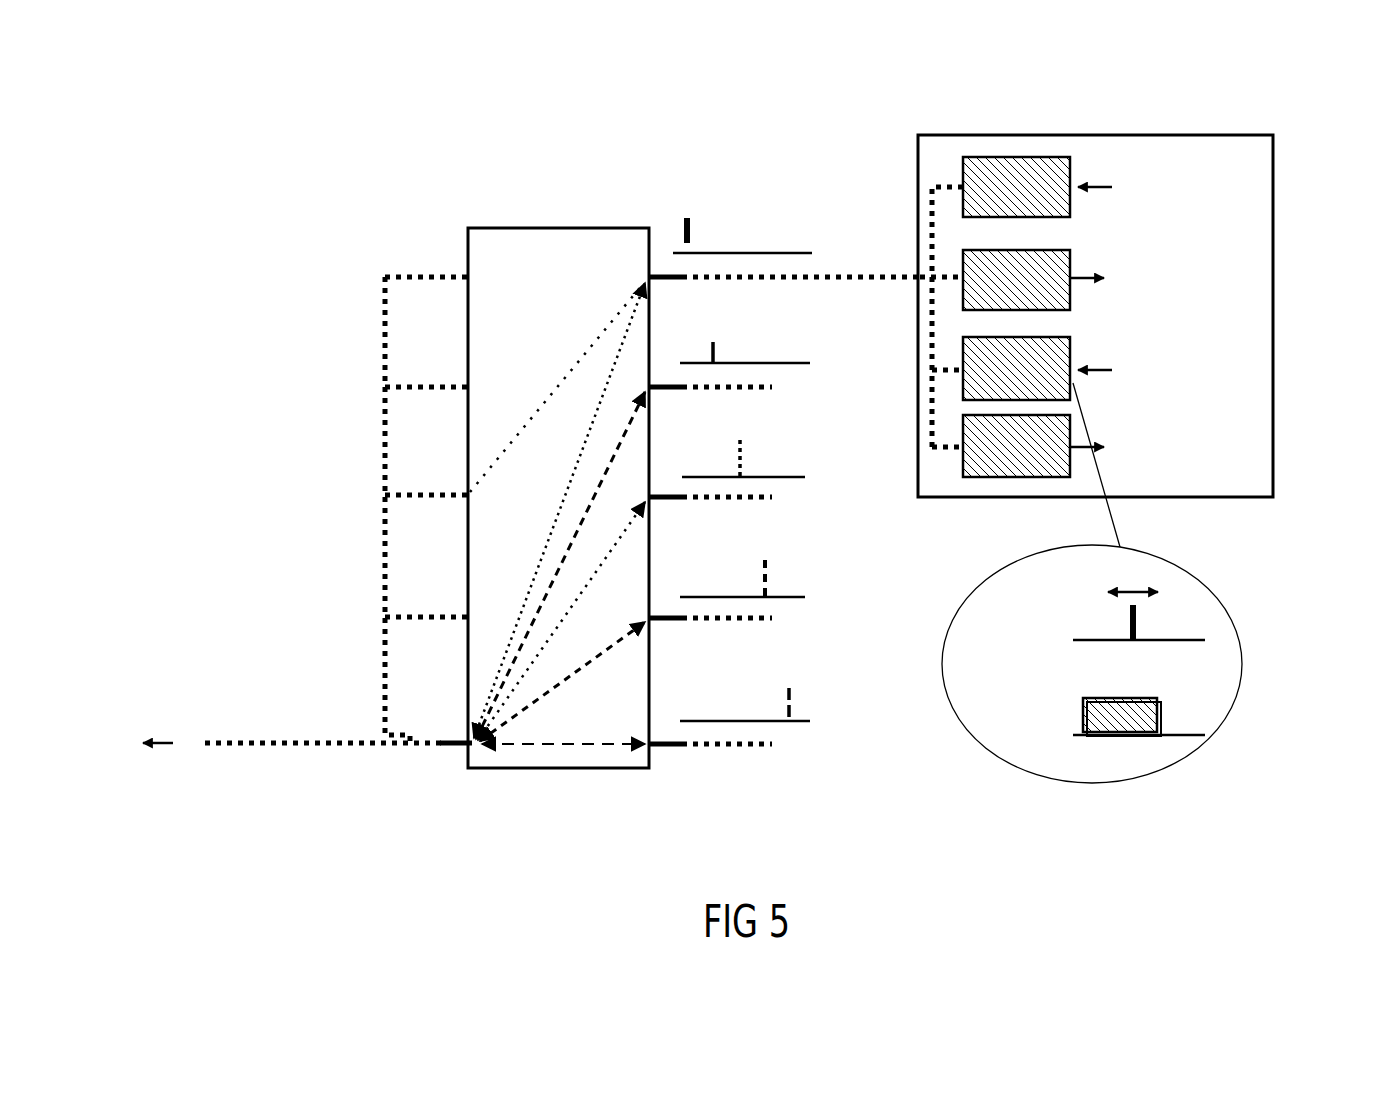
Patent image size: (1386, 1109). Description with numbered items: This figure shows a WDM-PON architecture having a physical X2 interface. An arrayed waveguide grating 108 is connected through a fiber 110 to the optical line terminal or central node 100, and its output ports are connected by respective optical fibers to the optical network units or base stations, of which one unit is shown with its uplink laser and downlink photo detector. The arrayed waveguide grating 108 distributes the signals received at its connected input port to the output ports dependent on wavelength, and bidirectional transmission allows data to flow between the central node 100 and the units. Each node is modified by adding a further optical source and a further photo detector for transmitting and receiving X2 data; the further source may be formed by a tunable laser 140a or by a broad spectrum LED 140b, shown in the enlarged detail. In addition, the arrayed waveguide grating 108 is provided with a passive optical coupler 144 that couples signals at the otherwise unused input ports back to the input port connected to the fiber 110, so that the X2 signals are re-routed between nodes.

The central node 100 is at (236, 757).
The arrayed waveguide grating 108 is at (493, 228).
The fiber 110 is at (258, 742).
The tunable laser 140a is at (1220, 618).
The LED 140b is at (1214, 718).
The passive optical coupler 144 is at (385, 340).